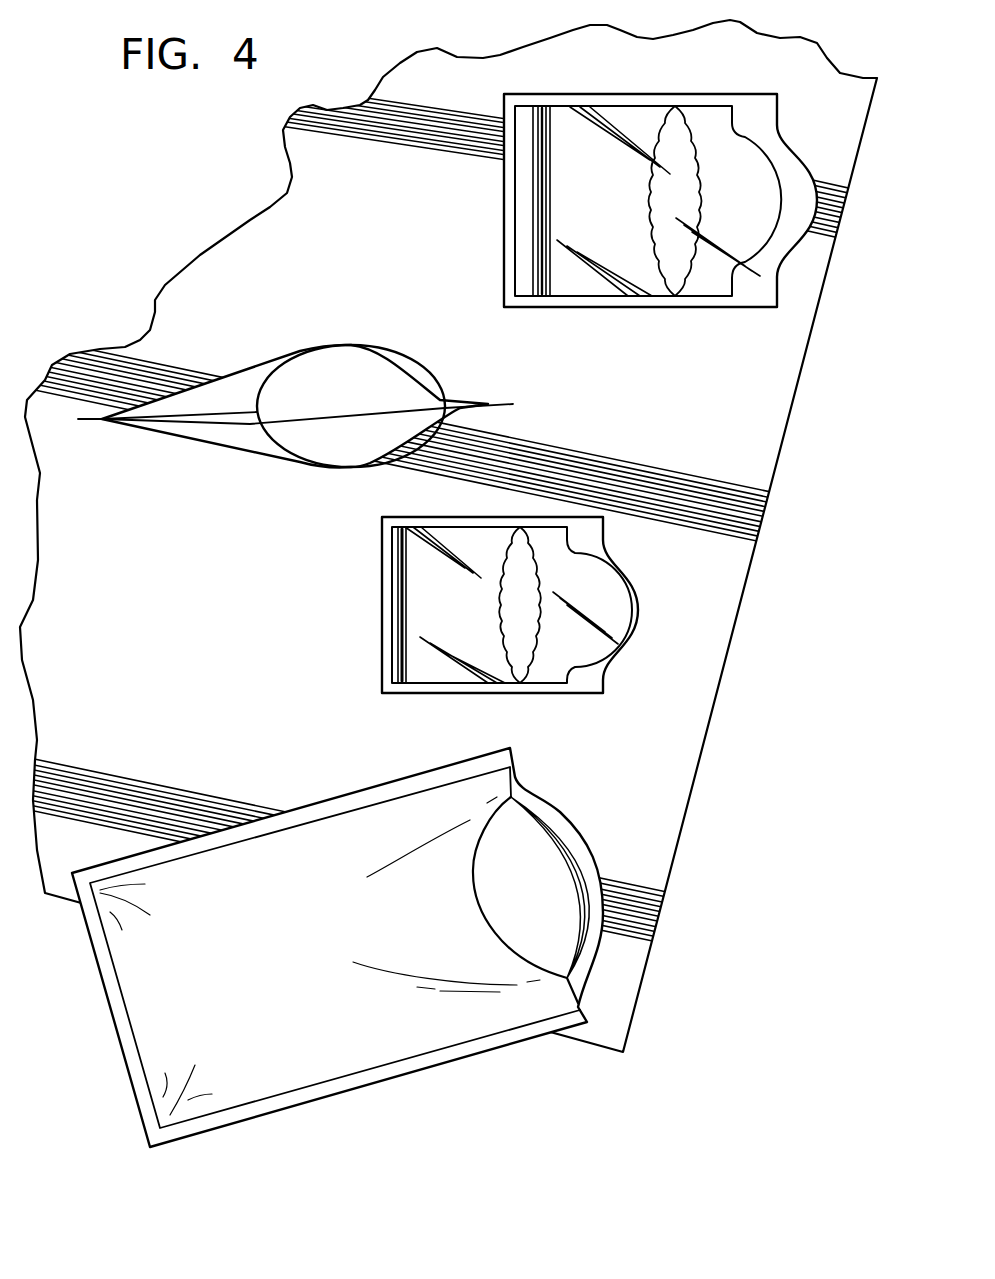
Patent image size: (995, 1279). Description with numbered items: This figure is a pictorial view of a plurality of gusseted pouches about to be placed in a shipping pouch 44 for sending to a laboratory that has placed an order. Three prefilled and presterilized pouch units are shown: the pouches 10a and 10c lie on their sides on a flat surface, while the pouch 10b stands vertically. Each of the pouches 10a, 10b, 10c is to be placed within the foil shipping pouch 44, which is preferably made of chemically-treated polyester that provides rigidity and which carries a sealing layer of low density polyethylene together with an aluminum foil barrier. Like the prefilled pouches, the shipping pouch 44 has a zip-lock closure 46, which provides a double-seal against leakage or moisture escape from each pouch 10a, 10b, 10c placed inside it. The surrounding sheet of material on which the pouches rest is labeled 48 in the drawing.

The prefilled pouch 10a is at (497, 240).
The prefilled pouch 10b is at (262, 459).
The prefilled pouch 10c is at (378, 642).
The shipping pouch 44 is at (335, 796).
The zip-lock closure 46 is at (543, 812).
The web / sheet of packaging material 48 is at (135, 660).